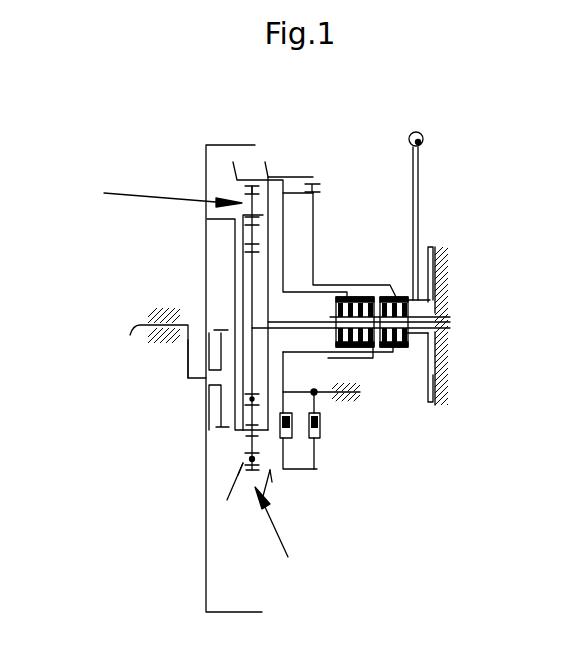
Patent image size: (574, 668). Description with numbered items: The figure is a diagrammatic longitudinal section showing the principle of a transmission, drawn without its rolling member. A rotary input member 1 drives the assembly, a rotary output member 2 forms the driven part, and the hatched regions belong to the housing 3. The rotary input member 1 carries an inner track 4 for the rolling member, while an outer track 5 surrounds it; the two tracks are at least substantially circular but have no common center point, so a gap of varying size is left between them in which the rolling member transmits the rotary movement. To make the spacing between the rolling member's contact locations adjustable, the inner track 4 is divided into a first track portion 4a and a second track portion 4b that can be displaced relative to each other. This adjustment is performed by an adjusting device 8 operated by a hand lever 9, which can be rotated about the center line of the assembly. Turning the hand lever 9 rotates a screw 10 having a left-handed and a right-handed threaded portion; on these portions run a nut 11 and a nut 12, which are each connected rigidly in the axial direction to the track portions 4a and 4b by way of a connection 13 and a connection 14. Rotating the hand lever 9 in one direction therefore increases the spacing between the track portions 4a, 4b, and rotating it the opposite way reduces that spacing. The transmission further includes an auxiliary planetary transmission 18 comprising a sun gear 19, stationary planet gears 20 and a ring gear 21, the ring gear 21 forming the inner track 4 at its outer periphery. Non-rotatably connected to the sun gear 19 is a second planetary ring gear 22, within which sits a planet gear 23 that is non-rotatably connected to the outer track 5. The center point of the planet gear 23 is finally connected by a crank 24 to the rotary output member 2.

The rotary input member 1 is at (300, 178).
The rotary output member 2 is at (130, 335).
The housing 3 is at (432, 404).
The inner track 4 is at (261, 526).
The first track portion 4a is at (244, 486).
The second track portion 4b is at (272, 482).
The outer track 5 is at (253, 609).
The adjusting device 8 is at (390, 374).
The hand lever 9 is at (412, 212).
The screw 10 is at (375, 347).
The nut 11 is at (363, 297).
The nut 12 is at (403, 295).
The connection 13 is at (298, 453).
The connection 14 is at (319, 450).
The planetary transmission 18 is at (159, 195).
The sun gear 19 is at (252, 287).
The stationary planet gears 20 is at (248, 194).
The ring gear 21 is at (248, 466).
The second planetary ring gear 22 is at (207, 221).
The planet gear 23 is at (220, 406).
The crank 24 is at (188, 368).